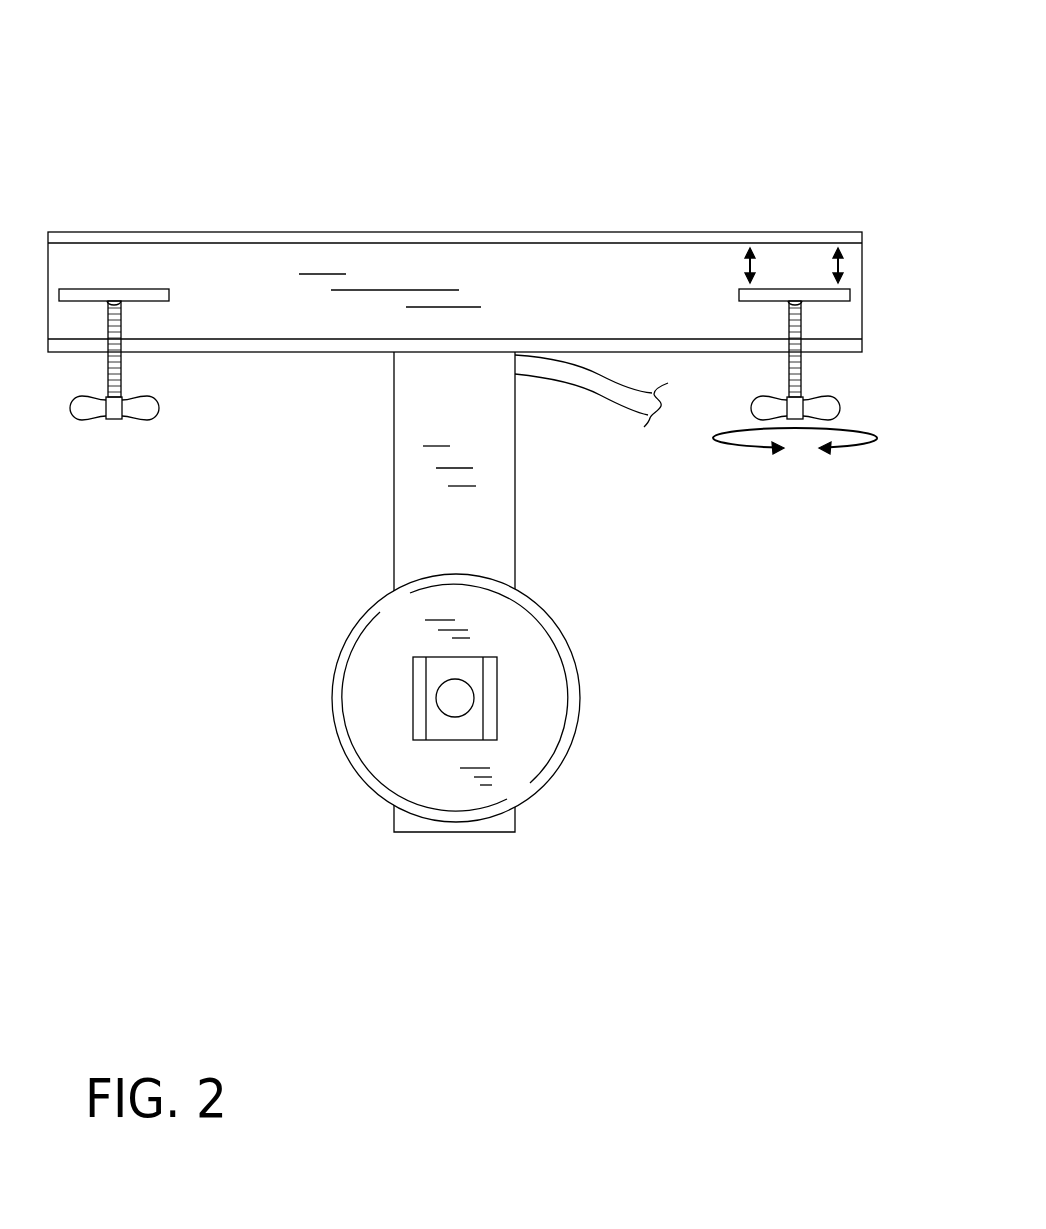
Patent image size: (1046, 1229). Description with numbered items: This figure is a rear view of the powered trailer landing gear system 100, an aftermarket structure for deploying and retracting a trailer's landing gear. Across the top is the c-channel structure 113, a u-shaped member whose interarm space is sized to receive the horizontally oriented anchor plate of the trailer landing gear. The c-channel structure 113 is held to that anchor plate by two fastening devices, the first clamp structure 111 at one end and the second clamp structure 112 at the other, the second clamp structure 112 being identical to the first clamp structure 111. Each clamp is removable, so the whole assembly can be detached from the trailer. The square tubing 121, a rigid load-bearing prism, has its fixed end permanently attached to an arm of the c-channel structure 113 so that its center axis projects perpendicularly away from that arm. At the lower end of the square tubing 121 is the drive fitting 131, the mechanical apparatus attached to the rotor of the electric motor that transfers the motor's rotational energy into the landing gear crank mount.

The powered trailer landing gear system 100 is at (683, 65).
The c-channel structure 113 is at (636, 267).
The second clamp structure 112 is at (115, 420).
The first clamp structure 111 is at (805, 448).
The square tubing 121 is at (480, 512).
The drive fitting 131 is at (480, 697).